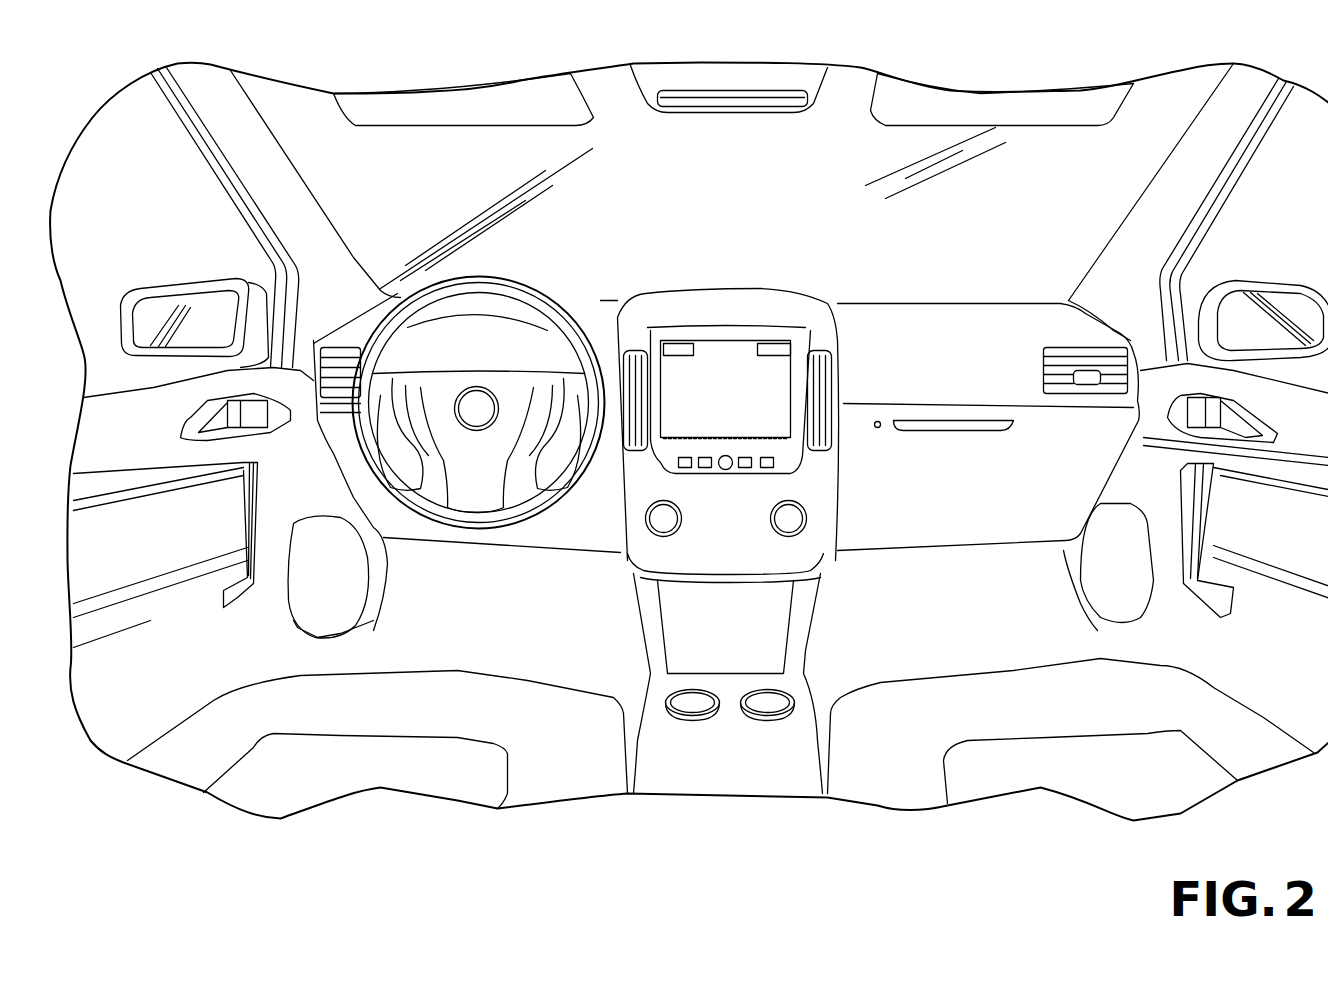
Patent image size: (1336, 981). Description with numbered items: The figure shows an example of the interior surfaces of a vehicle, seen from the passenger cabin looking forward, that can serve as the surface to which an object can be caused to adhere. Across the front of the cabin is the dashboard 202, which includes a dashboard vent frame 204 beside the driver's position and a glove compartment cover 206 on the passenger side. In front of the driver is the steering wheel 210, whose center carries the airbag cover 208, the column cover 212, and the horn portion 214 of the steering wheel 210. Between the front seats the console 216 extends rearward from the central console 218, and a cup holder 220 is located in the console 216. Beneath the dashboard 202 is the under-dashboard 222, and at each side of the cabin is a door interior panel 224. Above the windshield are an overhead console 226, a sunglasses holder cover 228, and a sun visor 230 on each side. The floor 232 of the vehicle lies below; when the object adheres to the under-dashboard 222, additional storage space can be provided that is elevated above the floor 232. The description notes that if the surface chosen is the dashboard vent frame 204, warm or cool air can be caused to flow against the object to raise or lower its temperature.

The dashboard 202 is at (962, 330).
The dashboard vent frame 204 is at (340, 355).
The glove compartment cover 206 is at (1033, 455).
The airbag cover 208 is at (513, 505).
The steering wheel 210 is at (490, 471).
The column cover 212 is at (513, 505).
The horn portion 214 is at (477, 417).
The console 216 is at (748, 713).
The central console 218 is at (770, 423).
The cup holder 220 is at (697, 688).
The under-dashboard 222 is at (975, 553).
The door interior panel 224 is at (163, 673).
The overhead console 226 is at (729, 100).
The sunglasses holder cover 228 is at (703, 101).
The sun visor 230 is at (540, 97).
The floor 232 is at (517, 645).